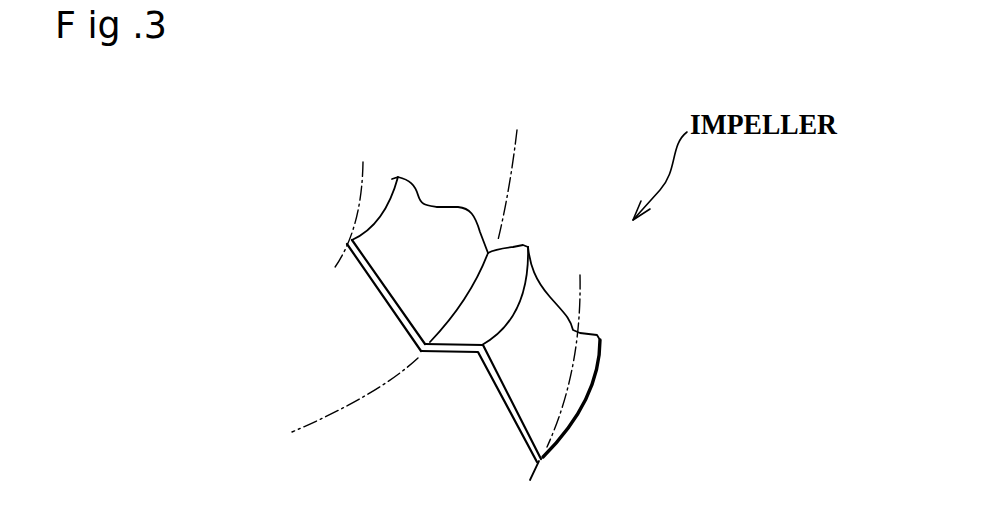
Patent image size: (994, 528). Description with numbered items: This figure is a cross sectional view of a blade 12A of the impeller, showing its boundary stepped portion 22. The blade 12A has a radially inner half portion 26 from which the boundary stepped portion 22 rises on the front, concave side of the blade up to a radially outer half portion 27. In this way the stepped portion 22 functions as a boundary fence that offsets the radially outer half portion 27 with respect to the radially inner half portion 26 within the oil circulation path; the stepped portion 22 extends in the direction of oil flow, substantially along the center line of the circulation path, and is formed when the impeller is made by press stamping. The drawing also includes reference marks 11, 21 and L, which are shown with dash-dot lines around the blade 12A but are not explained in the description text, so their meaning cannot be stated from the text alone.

The impeller outer circumference 11 is at (582, 293).
The blade 12A is at (513, 243).
The first plate portion 21 is at (358, 190).
The boundary stepped portion 22 is at (462, 335).
The radially inner half portion 26 is at (433, 230).
The radially outer half portion 27 is at (548, 360).
The reference line L is at (352, 407).